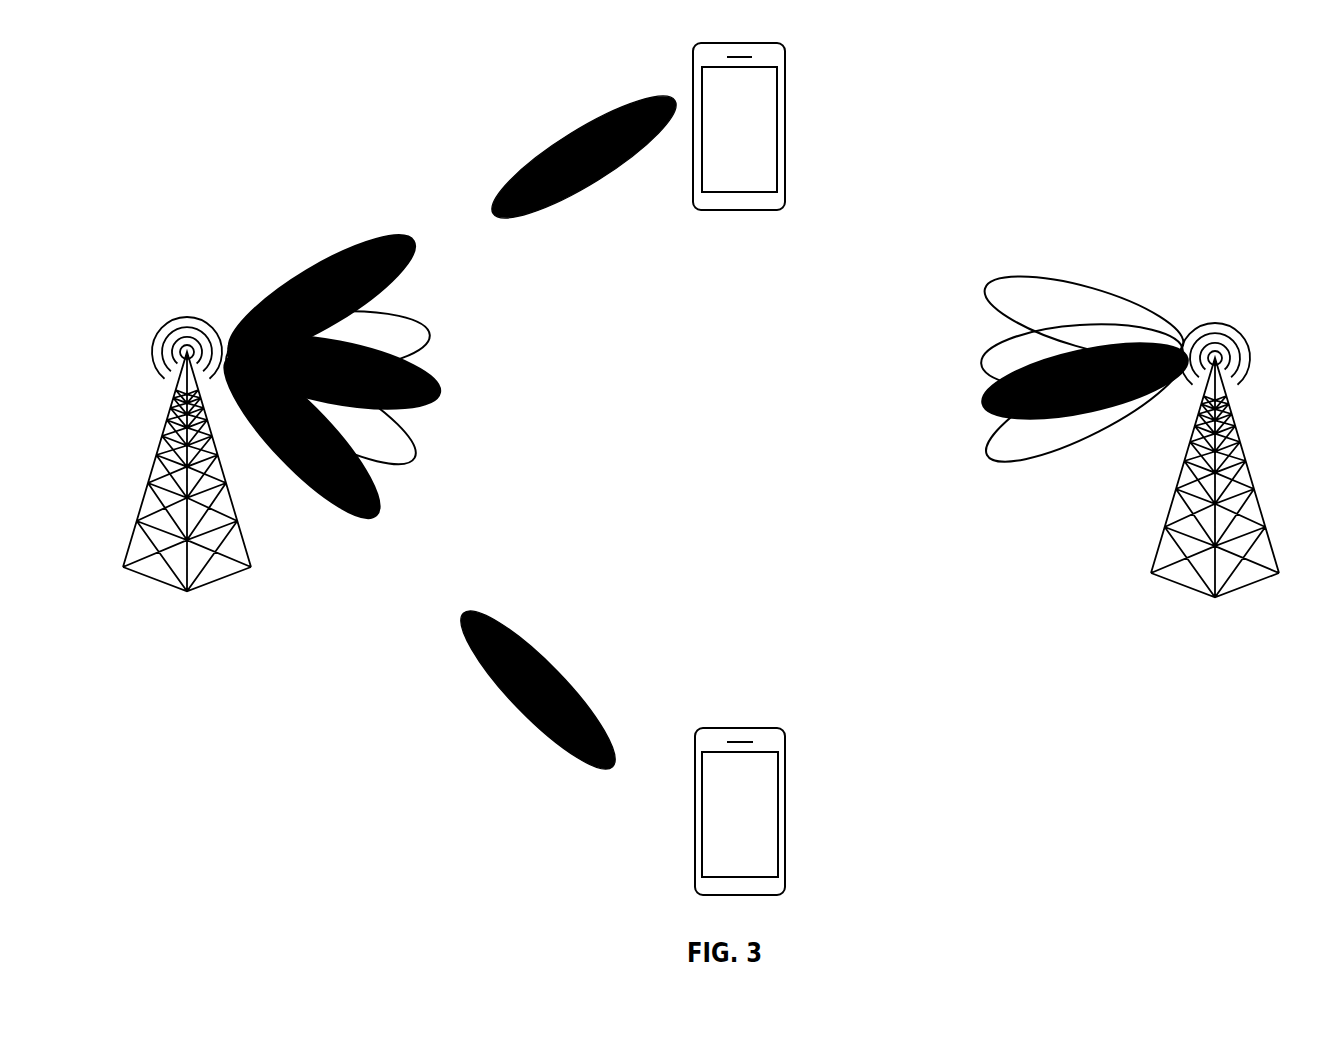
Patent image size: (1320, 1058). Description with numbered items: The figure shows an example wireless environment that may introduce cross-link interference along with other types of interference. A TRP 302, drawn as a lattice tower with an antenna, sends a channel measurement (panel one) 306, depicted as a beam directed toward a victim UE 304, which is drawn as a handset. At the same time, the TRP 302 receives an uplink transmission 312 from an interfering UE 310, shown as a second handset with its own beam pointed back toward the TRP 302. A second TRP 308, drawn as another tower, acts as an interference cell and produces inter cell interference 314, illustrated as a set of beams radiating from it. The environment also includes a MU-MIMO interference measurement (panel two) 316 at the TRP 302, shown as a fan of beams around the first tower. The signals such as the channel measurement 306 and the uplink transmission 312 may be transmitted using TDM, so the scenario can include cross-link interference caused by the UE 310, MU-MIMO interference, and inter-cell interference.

The TRP 302 is at (150, 579).
The victim UE 304 is at (695, 810).
The channel measurement (panel 1) 306 is at (497, 682).
The TRP 308 is at (1248, 585).
The interfering UE 310 is at (785, 128).
The uplink transmission 312 is at (560, 140).
The inter cell interference 314 is at (1174, 346).
The MU-MIMO interference measurement (panel 2) 316 is at (442, 379).